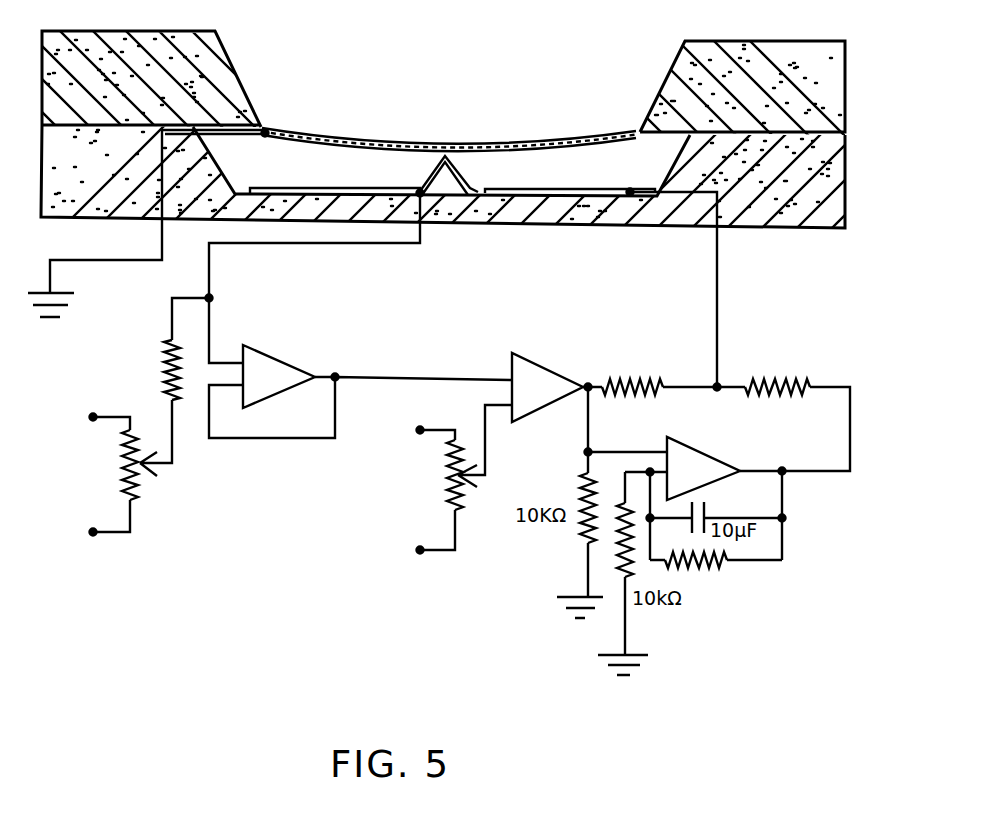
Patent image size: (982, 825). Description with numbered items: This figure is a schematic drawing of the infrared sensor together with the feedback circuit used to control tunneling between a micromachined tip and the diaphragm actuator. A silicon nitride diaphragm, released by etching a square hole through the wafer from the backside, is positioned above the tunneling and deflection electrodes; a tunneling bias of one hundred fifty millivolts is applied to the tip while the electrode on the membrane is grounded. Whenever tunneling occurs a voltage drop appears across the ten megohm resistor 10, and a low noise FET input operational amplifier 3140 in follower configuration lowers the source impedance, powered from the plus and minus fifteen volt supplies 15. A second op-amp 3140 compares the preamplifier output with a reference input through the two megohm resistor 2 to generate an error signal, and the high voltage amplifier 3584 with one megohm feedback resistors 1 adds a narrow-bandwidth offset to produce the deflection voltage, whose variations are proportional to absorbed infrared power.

The 10 megohm resistor 10 is at (155, 386).
The ±15 V supply potentiometers 15 is at (249, 483).
The 3140 operational amplifiers 3140 is at (400, 416).
The 2 megohm resistor 2 is at (664, 372).
The 1 megohm resistors 1 is at (750, 475).
The 3584 operational amplifier 3584 is at (726, 468).